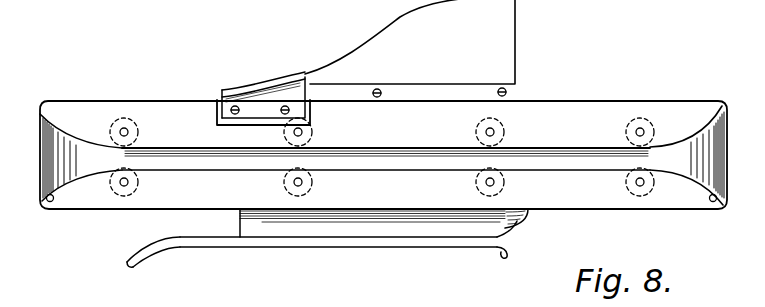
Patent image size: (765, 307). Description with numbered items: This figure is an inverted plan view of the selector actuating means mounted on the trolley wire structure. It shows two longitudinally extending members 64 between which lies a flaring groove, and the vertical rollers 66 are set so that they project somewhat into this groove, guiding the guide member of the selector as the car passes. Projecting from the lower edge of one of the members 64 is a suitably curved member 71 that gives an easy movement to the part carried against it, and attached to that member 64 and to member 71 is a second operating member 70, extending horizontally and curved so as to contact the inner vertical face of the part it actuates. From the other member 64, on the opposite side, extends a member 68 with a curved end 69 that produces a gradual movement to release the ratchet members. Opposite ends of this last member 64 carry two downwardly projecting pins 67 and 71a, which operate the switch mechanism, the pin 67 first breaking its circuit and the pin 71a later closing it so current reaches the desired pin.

The longitudinally extending members 64 is at (91, 105).
The vertical rollers 66 is at (121, 170).
The pin 67 is at (48, 203).
The member 68 is at (337, 245).
The curved end 69 is at (143, 258).
The second operating member 70 is at (397, 27).
The member 71 is at (248, 88).
The pin 71a is at (711, 204).